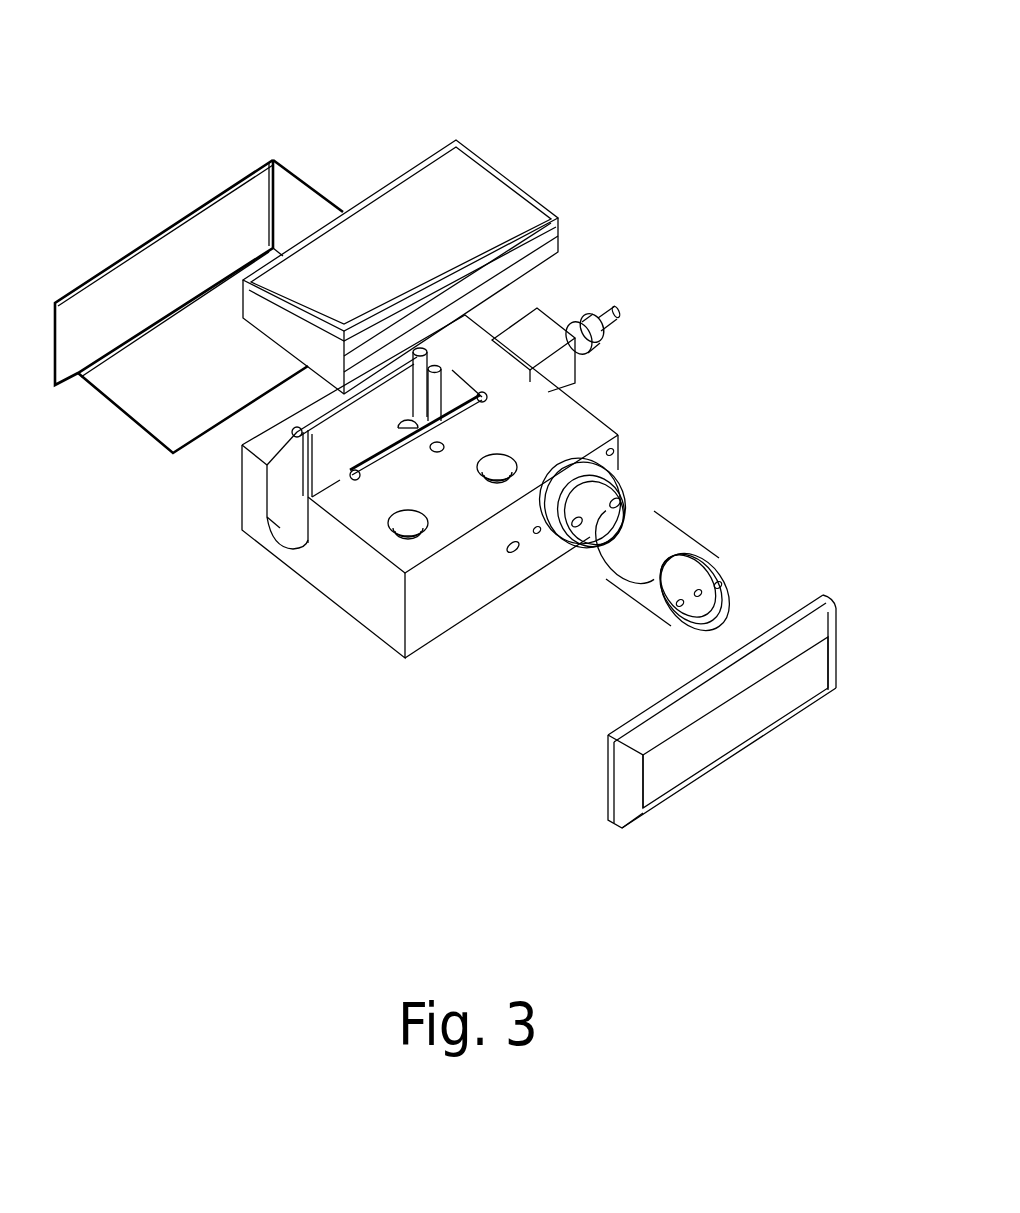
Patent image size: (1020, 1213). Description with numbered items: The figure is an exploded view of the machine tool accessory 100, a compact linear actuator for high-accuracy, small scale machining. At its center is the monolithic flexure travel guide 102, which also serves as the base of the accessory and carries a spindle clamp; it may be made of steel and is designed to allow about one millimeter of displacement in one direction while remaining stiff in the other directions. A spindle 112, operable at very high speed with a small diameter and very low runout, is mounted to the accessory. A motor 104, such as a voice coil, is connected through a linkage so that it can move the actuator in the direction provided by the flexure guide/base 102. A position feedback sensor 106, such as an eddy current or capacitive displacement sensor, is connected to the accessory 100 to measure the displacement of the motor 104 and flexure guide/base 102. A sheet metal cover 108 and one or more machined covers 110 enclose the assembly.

The machine tool accessory 100 is at (445, 443).
The monolithic flexure travel guide 102 is at (377, 494).
The motor 104 is at (706, 510).
The position feedback sensor 106 is at (402, 550).
The sheet metal cover 108 is at (199, 260).
The machined covers 110 is at (539, 443).
The spindle 112 is at (640, 286).